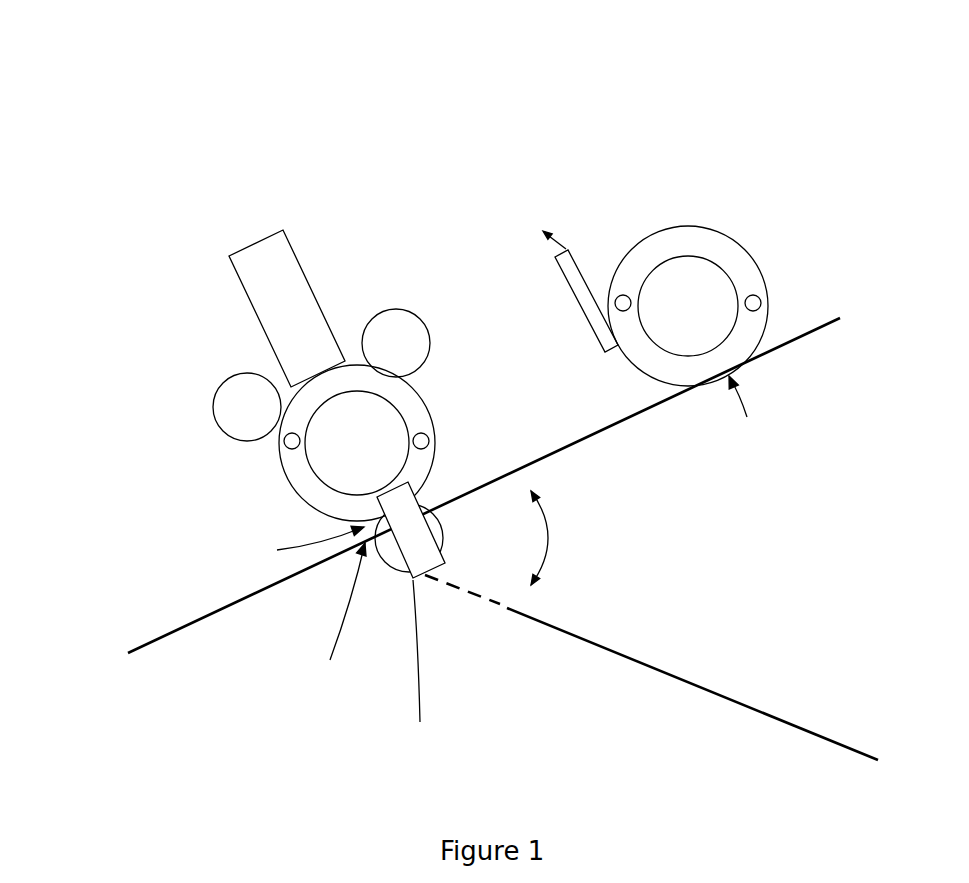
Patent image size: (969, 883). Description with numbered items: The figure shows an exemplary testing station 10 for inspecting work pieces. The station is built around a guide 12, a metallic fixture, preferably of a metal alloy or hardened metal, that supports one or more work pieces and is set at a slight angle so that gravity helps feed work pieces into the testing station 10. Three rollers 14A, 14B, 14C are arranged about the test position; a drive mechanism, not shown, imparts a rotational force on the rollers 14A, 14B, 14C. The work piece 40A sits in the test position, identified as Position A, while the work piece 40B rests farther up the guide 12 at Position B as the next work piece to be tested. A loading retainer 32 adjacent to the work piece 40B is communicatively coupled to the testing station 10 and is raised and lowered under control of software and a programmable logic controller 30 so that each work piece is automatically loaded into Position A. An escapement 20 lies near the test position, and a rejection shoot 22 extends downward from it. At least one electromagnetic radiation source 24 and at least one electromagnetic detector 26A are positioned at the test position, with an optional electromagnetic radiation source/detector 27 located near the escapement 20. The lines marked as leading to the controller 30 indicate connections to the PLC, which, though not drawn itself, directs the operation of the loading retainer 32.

The testing station 10 is at (460, 137).
The guide 12 is at (175, 618).
The roller 14A is at (221, 387).
The roller 14B is at (412, 311).
The roller 14C is at (443, 531).
The escapement 20 is at (447, 493).
The rejection shoot 22 is at (665, 668).
The electromagnetic radiation source 24 is at (342, 438).
The electromagnetic detector 26A is at (307, 275).
The electromagnetic radiation source/detector 27 is at (432, 552).
The programmable logic controller 30 is at (430, 483).
The loading retainer 32 is at (577, 241).
The work piece 40A is at (279, 451).
The work piece 40B is at (692, 229).